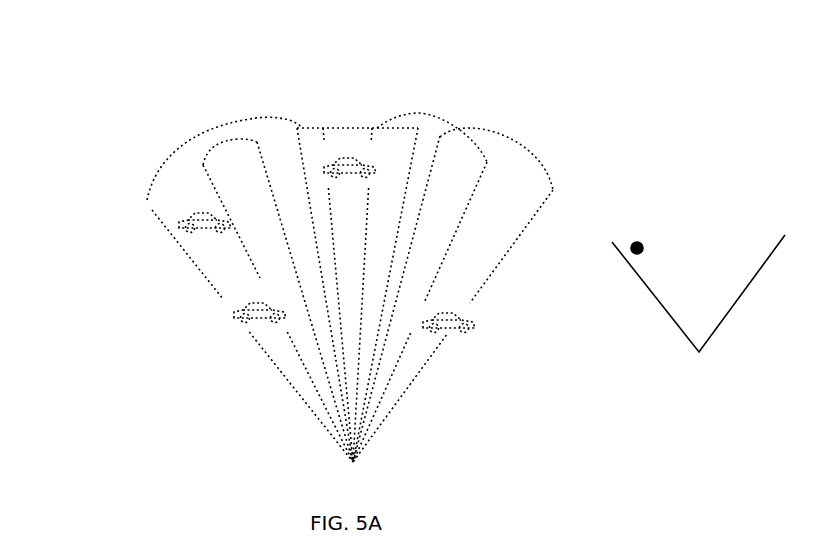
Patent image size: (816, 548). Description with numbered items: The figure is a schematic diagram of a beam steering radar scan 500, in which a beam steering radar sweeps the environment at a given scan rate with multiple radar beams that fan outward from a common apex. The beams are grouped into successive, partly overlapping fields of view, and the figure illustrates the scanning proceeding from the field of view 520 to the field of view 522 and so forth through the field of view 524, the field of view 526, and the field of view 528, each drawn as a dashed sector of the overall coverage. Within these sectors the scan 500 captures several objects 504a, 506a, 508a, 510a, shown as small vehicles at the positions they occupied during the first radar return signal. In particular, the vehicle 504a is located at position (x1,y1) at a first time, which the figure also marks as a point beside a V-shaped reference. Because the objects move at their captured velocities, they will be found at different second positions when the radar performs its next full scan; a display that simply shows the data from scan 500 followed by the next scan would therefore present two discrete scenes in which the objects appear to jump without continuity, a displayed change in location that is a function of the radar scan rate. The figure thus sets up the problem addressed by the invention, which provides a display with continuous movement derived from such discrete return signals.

The beam steering radar scan 500 is at (160, 73).
The vehicle 504a is at (206, 221).
The object 506a is at (272, 288).
The object 508a is at (345, 158).
The object 510a is at (440, 312).
The field of view 520 is at (152, 208).
The field of view 522 is at (249, 117).
The field of view 524 is at (333, 127).
The field of view 526 is at (417, 112).
The field of view 528 is at (520, 143).